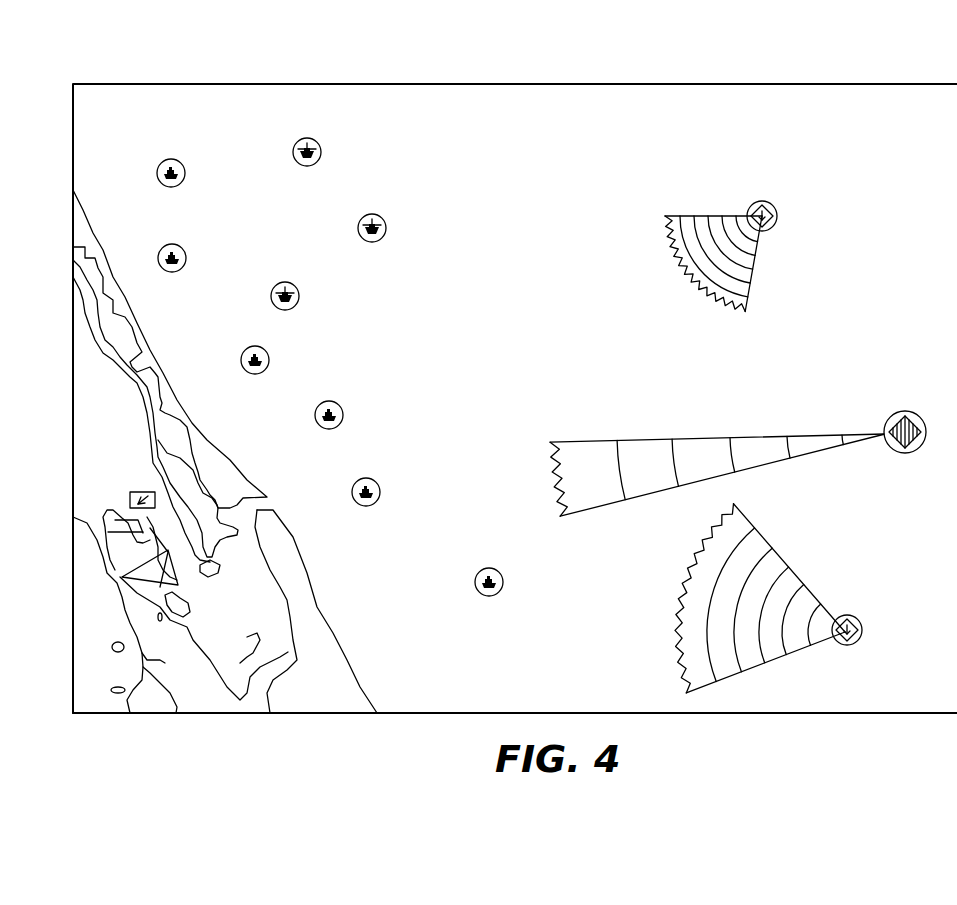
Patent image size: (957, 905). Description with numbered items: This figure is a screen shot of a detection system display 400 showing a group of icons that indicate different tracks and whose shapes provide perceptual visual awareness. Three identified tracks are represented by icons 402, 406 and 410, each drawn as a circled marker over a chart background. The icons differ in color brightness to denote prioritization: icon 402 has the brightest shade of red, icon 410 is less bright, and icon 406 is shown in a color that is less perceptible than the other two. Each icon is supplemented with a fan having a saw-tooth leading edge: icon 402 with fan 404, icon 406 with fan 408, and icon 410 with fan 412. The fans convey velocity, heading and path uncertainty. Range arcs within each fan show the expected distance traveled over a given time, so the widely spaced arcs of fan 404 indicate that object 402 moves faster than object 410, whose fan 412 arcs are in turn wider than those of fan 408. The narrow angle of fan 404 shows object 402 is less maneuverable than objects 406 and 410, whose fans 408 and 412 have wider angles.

The display screen / chart display 400 is at (148, 60).
The icon 402 is at (900, 413).
The fan 404 is at (595, 440).
The icon 406 is at (778, 210).
The fan 408 is at (702, 212).
The icon 410 is at (863, 610).
The fan 412 is at (777, 557).